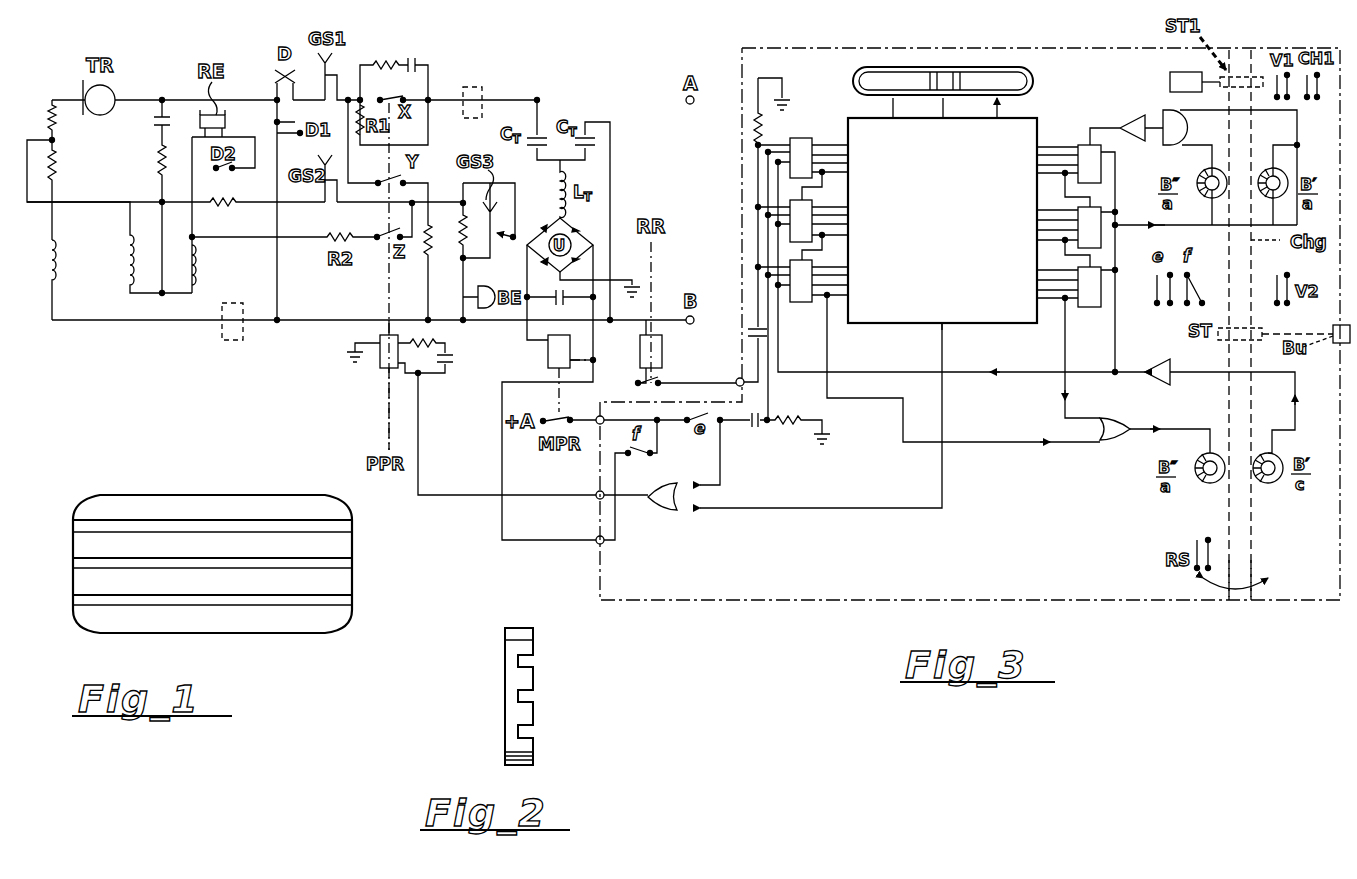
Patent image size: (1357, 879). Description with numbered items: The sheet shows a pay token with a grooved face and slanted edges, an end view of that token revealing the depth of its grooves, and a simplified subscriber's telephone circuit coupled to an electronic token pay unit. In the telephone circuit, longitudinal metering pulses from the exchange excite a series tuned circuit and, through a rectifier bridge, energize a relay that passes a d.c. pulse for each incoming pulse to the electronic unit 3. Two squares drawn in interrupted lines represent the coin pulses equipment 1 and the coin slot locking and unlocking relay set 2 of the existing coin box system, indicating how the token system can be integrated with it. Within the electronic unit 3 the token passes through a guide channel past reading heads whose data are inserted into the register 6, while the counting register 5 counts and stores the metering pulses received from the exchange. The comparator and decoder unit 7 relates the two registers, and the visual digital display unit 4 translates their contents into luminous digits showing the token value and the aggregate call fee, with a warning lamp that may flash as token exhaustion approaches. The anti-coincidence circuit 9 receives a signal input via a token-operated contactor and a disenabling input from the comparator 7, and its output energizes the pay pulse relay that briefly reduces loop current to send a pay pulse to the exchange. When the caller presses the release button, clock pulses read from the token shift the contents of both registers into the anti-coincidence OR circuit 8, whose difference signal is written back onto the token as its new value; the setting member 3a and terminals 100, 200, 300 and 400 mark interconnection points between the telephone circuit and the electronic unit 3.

The coin pulses equipment 1 is at (482, 86).
The coin slot locking and unlocking relay set 2 is at (238, 302).
The electronic unit 3 is at (858, 585).
The setting member 3a is at (1240, 596).
The visual digital display unit 4 is at (1034, 82).
The counting register 5 is at (800, 150).
The register 6 is at (1085, 150).
The comparator and decoder unit 7 is at (942, 220).
The anti-coincidence OR circuit 8 is at (1112, 441).
The anti-coincidence circuit 9 is at (662, 510).
The terminal 100 is at (717, 372).
The terminal 200 is at (584, 408).
The terminal 300 is at (581, 530).
The terminal 400 is at (578, 485).